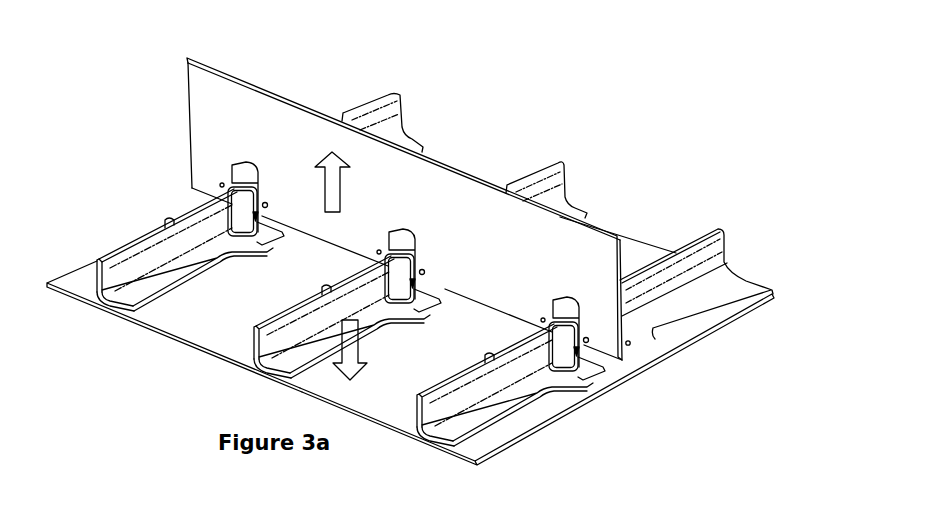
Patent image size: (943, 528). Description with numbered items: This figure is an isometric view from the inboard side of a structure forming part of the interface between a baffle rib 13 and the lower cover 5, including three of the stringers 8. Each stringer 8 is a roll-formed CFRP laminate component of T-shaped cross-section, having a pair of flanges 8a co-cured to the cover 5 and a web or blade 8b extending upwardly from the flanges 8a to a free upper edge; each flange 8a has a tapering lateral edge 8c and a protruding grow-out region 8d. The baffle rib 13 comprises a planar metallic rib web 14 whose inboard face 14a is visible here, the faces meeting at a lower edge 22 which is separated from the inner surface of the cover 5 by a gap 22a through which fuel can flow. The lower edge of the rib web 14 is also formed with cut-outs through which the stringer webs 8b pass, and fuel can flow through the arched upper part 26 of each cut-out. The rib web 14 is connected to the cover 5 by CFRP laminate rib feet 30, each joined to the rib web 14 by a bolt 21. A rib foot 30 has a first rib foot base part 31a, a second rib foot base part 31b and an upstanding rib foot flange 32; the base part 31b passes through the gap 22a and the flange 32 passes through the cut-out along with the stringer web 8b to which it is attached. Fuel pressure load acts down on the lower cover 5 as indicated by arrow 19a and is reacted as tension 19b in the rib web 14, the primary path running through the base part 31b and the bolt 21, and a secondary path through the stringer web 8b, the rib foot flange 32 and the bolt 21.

The lower cover 5 is at (410, 349).
The stringer 8 is at (409, 111).
The flange 8a is at (160, 290).
The web 8b is at (100, 266).
The tapering lateral edge 8c is at (562, 392).
The grow-out region 8d is at (641, 338).
The baffle rib 13 is at (466, 162).
The rib web 14 is at (364, 191).
The inboard face 14a is at (220, 110).
The arrow 19a is at (348, 377).
The tension 19b is at (331, 150).
The bolt 21 is at (629, 345).
The lower edge 22 is at (325, 245).
The gap 22a is at (480, 313).
The arched upper part 26 is at (172, 237).
The rib foot 30 is at (591, 366).
The first rib foot base part 31a is at (245, 236).
The second rib foot base part 31b is at (265, 238).
The rib foot flange 32 is at (473, 457).